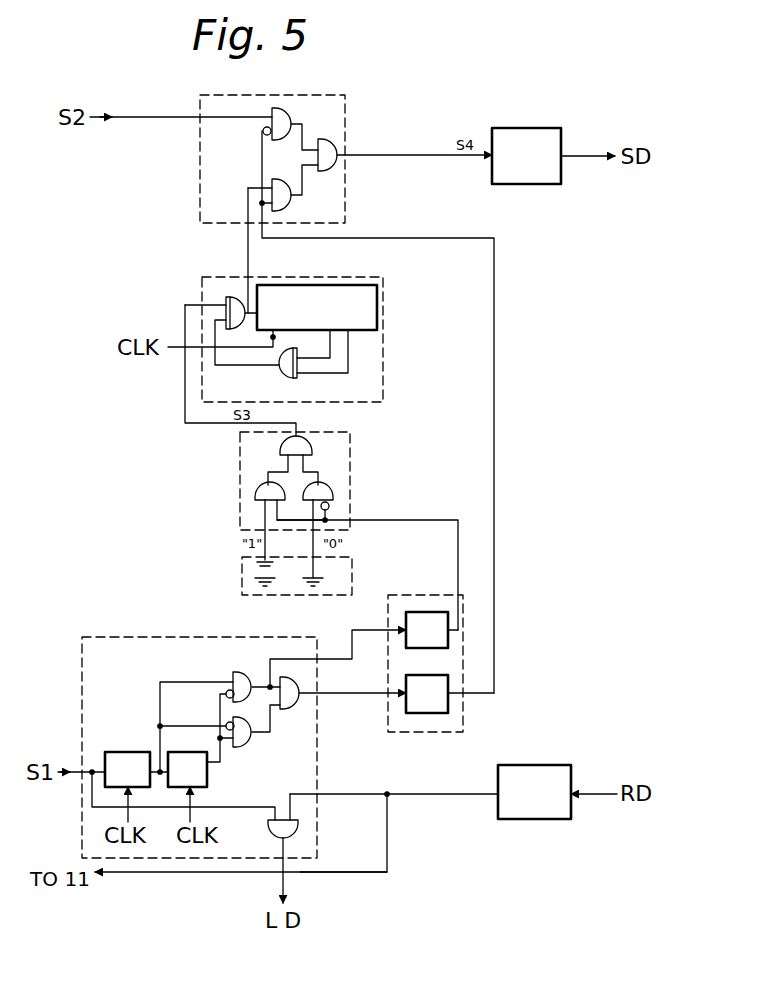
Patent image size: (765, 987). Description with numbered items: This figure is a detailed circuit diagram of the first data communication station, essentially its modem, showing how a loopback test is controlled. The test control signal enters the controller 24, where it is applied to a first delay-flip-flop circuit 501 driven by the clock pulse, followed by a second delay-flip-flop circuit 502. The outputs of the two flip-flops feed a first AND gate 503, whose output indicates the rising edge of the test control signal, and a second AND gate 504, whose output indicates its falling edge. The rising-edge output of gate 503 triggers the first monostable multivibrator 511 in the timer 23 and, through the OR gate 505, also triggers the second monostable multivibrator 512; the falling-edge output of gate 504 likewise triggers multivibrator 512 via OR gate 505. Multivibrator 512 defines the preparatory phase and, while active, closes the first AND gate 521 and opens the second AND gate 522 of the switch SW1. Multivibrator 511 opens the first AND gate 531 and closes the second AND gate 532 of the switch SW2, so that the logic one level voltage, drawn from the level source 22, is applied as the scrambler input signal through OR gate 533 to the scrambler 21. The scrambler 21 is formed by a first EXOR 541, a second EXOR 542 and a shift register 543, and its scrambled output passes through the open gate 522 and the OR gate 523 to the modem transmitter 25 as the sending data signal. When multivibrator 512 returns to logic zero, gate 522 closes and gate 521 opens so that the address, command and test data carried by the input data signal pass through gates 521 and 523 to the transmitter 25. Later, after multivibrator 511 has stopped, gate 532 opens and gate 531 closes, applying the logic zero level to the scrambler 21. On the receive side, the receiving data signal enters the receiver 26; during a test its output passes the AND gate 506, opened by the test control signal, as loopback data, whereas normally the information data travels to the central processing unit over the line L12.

The switch SW1 is at (345, 107).
The first AND gate 521 is at (290, 107).
The second AND gate 522 is at (290, 203).
The OR gate 523 is at (332, 132).
The modem transmitter 25 is at (538, 128).
The scrambler 21 is at (383, 287).
The first EXOR 541 is at (232, 298).
The second EXOR 542 is at (278, 380).
The shift register 543 is at (324, 285).
The switch SW2 is at (350, 445).
The OR gate 533 is at (318, 444).
The first AND gate 531 is at (258, 488).
The second AND gate 532 is at (334, 492).
The logic level source 22 is at (242, 583).
The timer 23 is at (425, 732).
The first monostable multivibrator 511 is at (416, 612).
The second monostable multivibrator 512 is at (410, 676).
The controller 24 is at (136, 637).
The first delay-flip-flop circuit 501 is at (120, 752).
The second delay-flip-flop circuit 502 is at (200, 787).
The first AND gate 503 is at (242, 672).
The second AND gate 504 is at (250, 748).
The OR gate 505 is at (292, 712).
The AND gate 506 is at (268, 832).
The receiver 26 is at (540, 765).
The line L12 is at (358, 872).